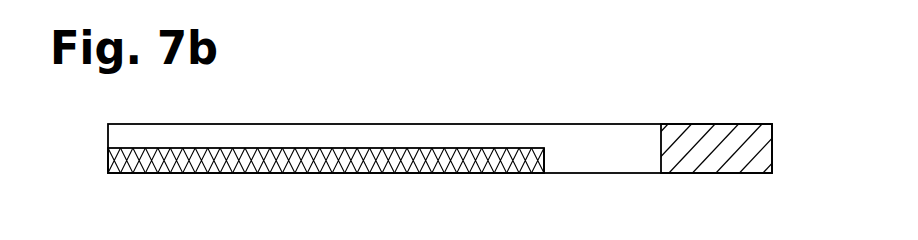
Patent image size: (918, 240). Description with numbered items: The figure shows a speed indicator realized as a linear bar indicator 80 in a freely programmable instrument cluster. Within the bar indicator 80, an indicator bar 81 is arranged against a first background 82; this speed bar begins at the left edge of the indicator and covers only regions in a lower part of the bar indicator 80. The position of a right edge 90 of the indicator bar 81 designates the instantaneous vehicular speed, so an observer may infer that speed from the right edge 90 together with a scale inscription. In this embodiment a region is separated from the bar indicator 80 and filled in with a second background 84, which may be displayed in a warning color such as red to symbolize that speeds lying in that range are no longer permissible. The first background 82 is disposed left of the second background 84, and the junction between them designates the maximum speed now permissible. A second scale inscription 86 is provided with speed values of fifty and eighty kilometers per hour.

The bar indicator 80 is at (792, 116).
The indicator bar 81 is at (367, 174).
The first background 82 is at (275, 142).
The second background 84 is at (727, 160).
The second scale inscription 86 is at (600, 107).
The right edge 90 is at (549, 174).